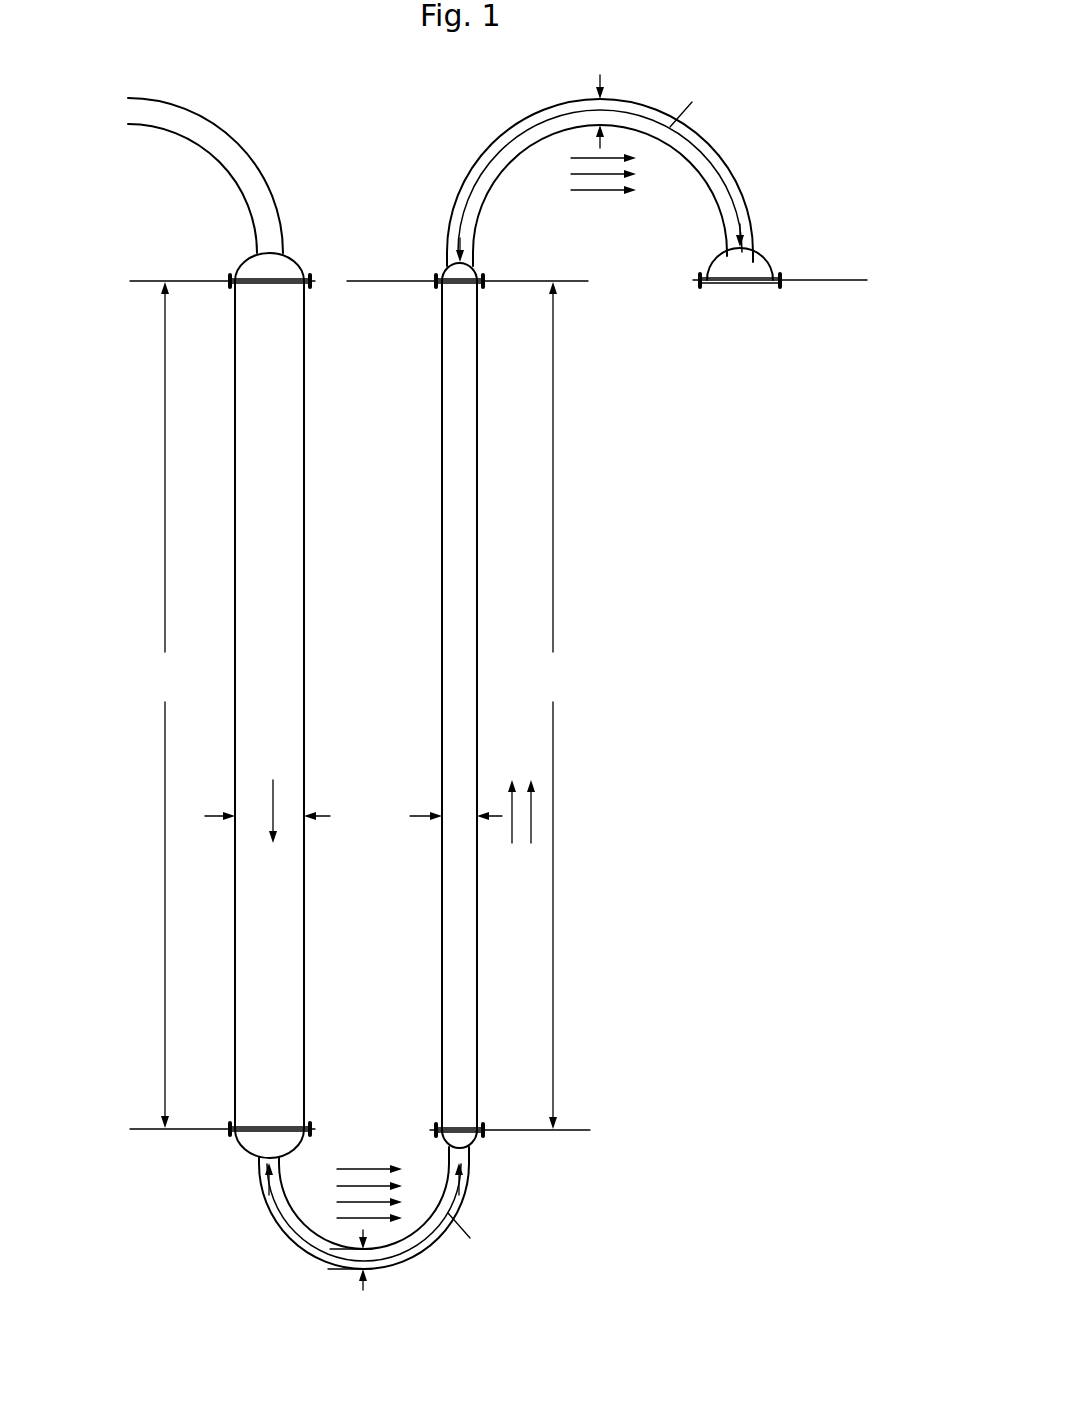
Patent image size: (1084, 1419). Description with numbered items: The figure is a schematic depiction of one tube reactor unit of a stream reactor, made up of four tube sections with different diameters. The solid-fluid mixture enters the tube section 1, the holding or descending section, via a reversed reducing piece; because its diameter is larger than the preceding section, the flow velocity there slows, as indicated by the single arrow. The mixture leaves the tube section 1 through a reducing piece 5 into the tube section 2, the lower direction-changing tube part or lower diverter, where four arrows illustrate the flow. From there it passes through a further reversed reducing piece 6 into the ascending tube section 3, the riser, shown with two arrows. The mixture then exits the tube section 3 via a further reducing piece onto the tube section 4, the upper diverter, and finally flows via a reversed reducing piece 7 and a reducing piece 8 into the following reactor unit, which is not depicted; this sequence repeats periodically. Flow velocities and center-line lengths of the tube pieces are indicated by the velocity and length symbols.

The tube section 1 is at (283, 408).
The tube section 2 is at (275, 1222).
The tube section 3 is at (458, 407).
The tube section 4 is at (745, 187).
The reducing piece 5 is at (240, 1143).
The reversed reducing piece 6 is at (472, 1143).
The reversed reducing piece 7 is at (445, 273).
The reducing piece 8 is at (770, 265).